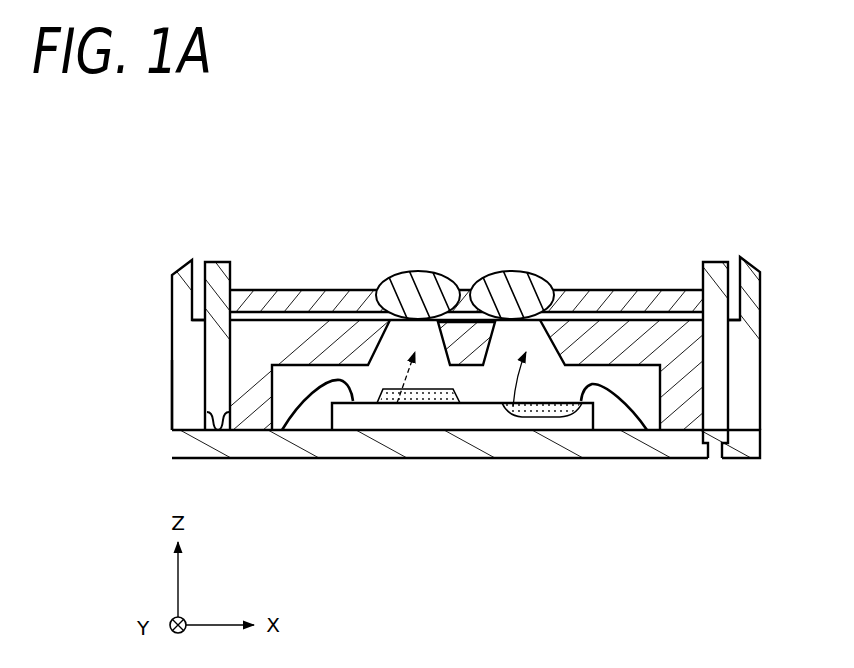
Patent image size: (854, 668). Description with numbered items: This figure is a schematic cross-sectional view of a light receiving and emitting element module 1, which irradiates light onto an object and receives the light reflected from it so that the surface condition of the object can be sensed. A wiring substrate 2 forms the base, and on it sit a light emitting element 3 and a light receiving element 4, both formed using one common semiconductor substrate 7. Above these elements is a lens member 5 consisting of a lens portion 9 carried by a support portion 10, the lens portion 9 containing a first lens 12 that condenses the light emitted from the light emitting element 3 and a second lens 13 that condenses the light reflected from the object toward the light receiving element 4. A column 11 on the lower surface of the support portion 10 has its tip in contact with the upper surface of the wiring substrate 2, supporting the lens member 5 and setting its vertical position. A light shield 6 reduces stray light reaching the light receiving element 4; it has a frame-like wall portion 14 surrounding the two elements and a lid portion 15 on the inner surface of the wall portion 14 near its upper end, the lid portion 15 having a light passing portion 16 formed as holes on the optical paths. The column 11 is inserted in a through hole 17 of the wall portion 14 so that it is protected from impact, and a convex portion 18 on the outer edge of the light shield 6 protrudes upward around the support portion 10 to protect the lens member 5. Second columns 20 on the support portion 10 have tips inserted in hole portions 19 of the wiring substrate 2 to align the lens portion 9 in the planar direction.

The light receiving and emitting element module 1 is at (669, 240).
The wiring substrate 2 is at (750, 445).
The light emitting element 3 is at (377, 407).
The light receiving element 4 is at (507, 421).
The lens member 5 is at (482, 364).
The light shield 6 is at (463, 336).
The semiconductor substrate 7 is at (455, 416).
The lens portion 9 is at (465, 258).
The support portion 10 is at (627, 306).
The column 11 is at (218, 322).
The first lens 12 is at (405, 291).
The second lens 13 is at (526, 296).
The wall portion 14 is at (201, 411).
The lid portion 15 is at (330, 352).
The light passing portion 16 is at (432, 394).
The through hole 17 is at (201, 412).
The convex portion 18 is at (183, 283).
The hole portion 19 is at (708, 459).
The second column 20 is at (718, 328).